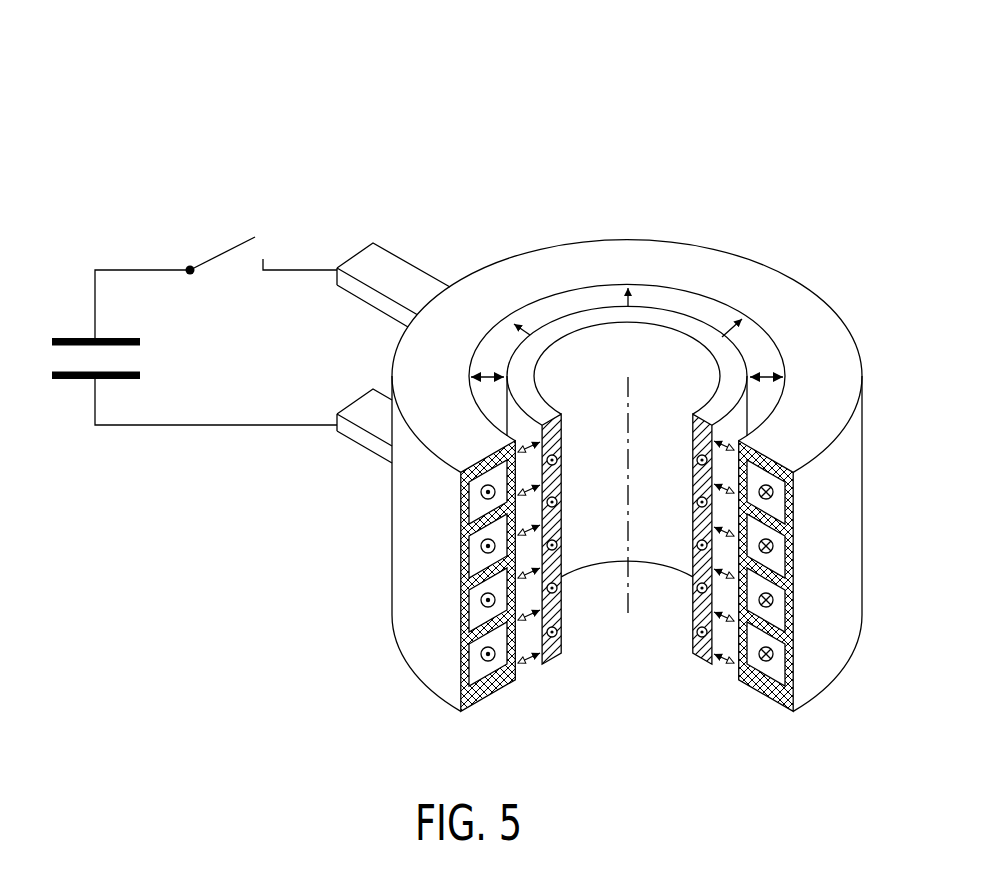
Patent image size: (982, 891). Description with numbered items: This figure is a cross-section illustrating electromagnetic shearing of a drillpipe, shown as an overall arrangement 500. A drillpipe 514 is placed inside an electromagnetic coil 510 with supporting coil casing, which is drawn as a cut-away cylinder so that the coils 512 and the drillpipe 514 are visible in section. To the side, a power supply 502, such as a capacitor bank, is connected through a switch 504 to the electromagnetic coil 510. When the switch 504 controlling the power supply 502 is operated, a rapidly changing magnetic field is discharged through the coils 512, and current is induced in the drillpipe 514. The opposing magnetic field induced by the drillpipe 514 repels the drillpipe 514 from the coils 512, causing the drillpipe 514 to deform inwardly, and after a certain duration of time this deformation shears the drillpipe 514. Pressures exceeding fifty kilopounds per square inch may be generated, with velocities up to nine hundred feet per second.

The electromagnetic pulse system 500 is at (240, 88).
The power supply 502 is at (132, 337).
The switch 504 is at (240, 242).
The electromagnetic coil 510 is at (722, 252).
The coils 512 is at (777, 670).
The drillpipe 514 is at (558, 647).